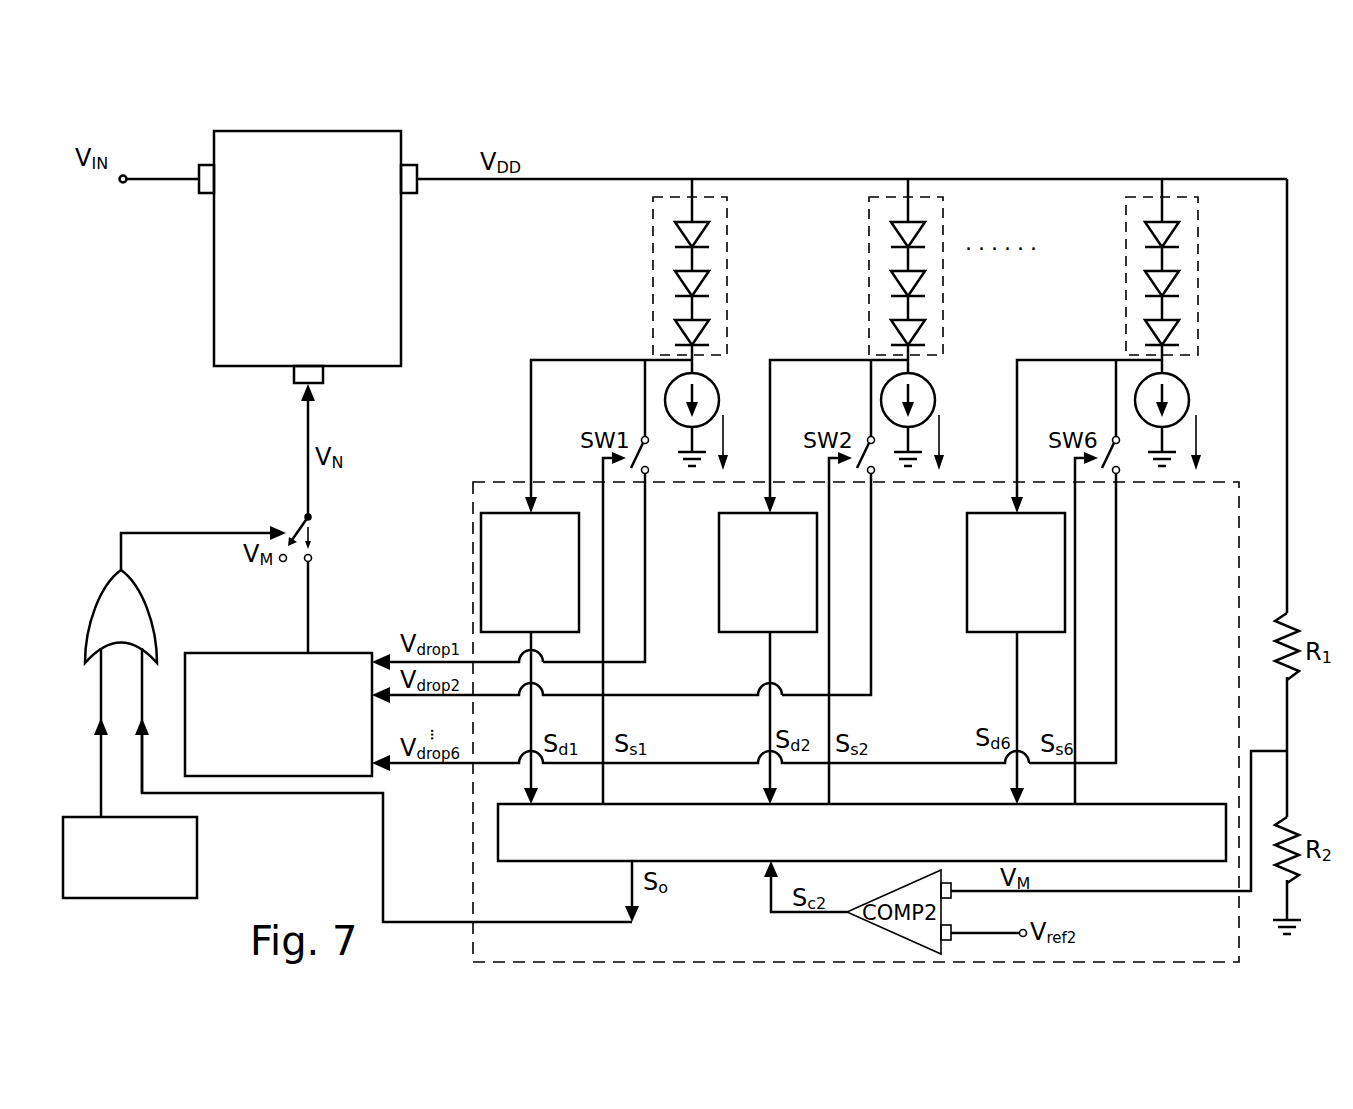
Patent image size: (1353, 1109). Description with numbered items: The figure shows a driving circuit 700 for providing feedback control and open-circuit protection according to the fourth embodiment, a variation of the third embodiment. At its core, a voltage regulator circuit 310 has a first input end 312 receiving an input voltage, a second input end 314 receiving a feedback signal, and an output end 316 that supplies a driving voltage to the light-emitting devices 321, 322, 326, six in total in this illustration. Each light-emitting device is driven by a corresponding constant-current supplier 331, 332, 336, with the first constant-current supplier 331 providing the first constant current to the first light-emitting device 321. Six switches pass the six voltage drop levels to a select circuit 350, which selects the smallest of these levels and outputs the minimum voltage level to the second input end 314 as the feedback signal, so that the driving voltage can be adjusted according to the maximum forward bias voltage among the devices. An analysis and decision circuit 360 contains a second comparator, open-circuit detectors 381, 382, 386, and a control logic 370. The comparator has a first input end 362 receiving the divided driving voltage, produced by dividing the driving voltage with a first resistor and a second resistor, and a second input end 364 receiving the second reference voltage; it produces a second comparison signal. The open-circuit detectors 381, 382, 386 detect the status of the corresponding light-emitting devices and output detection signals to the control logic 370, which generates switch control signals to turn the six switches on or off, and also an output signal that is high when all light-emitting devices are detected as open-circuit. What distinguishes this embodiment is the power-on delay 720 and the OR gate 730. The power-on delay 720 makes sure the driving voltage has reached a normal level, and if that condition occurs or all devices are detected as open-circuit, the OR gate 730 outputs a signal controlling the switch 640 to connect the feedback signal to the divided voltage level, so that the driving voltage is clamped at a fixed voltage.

The driving circuit 700 is at (1205, 160).
The voltage regulator circuit 310 is at (308, 131).
The first input end 312 is at (204, 165).
The second input end 314 is at (290, 383).
The output end 316 is at (410, 165).
The light-emitting device 321 is at (653, 284).
The light-emitting device 322 is at (869, 284).
The light-emitting device 326 is at (1126, 280).
The constant-current supplier 331 is at (735, 390).
The constant-current supplier 332 is at (935, 400).
The constant-current supplier 336 is at (1189, 400).
The select circuit 350 is at (276, 653).
The analysis and decision circuit 360 is at (474, 830).
The first input end 362 is at (955, 898).
The second input end 364 is at (955, 940).
The control logic 370 is at (713, 861).
The open-circuit detector 381 is at (579, 616).
The open-circuit detector 382 is at (722, 575).
The open-circuit detector 386 is at (969, 575).
The switch 640 is at (314, 540).
The power-on delay 720 is at (130, 898).
The OR gate 730 is at (144, 608).